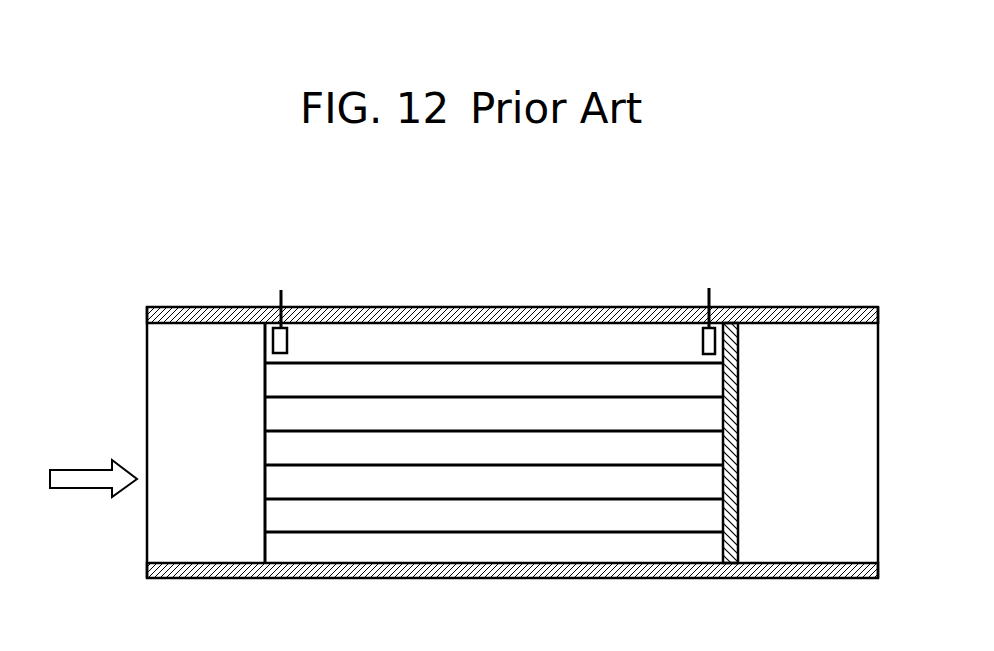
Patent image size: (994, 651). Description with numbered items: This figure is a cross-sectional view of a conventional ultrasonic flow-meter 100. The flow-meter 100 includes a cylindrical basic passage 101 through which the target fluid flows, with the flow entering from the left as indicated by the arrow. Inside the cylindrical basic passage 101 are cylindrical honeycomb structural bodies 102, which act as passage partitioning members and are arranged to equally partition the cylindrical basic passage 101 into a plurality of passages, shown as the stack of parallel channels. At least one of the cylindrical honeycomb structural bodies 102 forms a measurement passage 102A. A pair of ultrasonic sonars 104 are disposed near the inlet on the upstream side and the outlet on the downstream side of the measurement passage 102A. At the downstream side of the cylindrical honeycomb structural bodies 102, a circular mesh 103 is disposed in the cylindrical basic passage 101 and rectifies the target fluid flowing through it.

The conventional ultrasonic flow-meter 100 is at (212, 262).
The cylindrical basic passage 101 is at (503, 308).
The cylindrical honeycomb structural bodies 102 is at (265, 378).
The measurement passage 102A is at (540, 340).
The circular mesh 103 is at (740, 408).
The ultrasonic sonars 104 is at (283, 338).